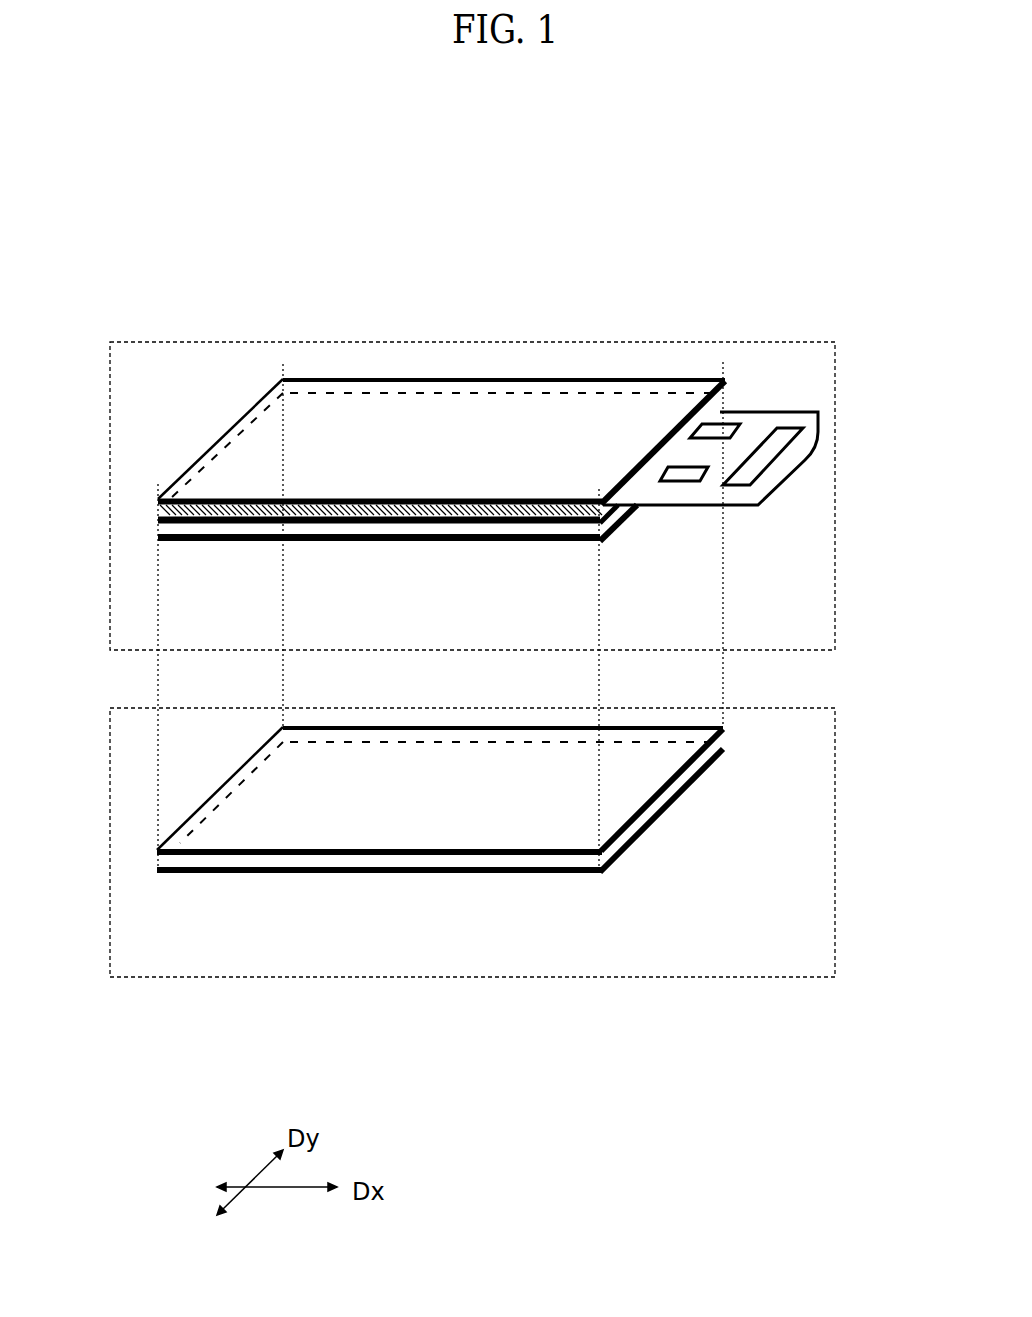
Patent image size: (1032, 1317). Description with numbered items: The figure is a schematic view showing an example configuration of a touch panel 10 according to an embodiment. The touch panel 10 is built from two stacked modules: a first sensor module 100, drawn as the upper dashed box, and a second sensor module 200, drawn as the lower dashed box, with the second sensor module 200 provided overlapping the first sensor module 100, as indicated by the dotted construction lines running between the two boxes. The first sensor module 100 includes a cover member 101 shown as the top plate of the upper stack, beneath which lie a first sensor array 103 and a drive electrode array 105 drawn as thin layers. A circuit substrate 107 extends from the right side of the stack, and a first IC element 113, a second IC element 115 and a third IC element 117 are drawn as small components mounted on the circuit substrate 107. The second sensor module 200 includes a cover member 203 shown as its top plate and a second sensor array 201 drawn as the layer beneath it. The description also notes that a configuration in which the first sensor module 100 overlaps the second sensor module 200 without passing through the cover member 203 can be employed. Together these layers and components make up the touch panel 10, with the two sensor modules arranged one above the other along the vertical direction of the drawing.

The touch panel 10 is at (718, 196).
The first sensor module 100 is at (383, 342).
The cover member 101 is at (520, 378).
The first sensor array 103 is at (376, 522).
The drive electrode array 105 is at (468, 542).
The circuit substrate 107 is at (768, 412).
The first IC element 113 is at (718, 422).
The second IC element 115 is at (675, 482).
The third IC element 117 is at (770, 462).
The second sensor module 200 is at (435, 978).
The second sensor array 201 is at (535, 876).
The cover member 203 is at (512, 727).